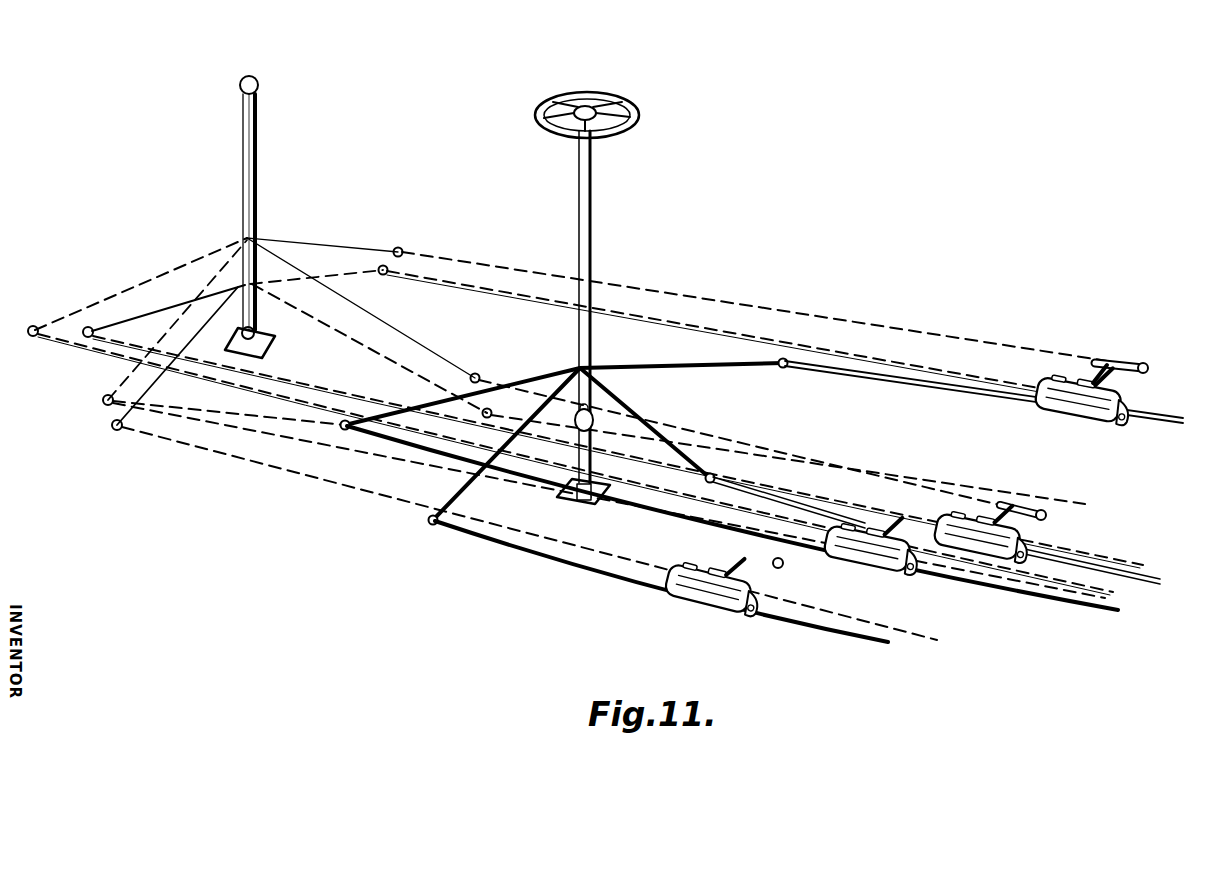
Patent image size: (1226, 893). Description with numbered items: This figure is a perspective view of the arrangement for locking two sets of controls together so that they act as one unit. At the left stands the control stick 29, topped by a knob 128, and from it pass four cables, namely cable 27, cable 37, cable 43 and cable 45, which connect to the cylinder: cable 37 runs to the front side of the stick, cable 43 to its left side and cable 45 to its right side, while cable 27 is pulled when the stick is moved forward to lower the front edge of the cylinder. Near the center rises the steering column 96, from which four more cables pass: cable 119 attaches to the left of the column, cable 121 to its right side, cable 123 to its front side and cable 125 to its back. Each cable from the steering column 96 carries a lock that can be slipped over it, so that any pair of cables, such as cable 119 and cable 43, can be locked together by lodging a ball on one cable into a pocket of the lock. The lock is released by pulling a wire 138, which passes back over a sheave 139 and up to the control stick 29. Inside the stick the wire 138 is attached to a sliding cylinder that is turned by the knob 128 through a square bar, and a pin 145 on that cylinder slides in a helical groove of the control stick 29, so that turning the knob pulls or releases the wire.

The cable 27 is at (365, 342).
The control stick 29 is at (258, 142).
The cable 37 is at (78, 322).
The cable 43 is at (240, 462).
The cable 45 is at (333, 270).
The steering column 96 is at (592, 270).
The cable 119 is at (430, 520).
The cable 121 is at (653, 366).
The cable 123 is at (558, 368).
The cable 125 is at (645, 412).
The knob 128 is at (257, 84).
The wire 138 is at (108, 396).
The sheave 139 is at (784, 566).
The pin 145 is at (1165, 380).